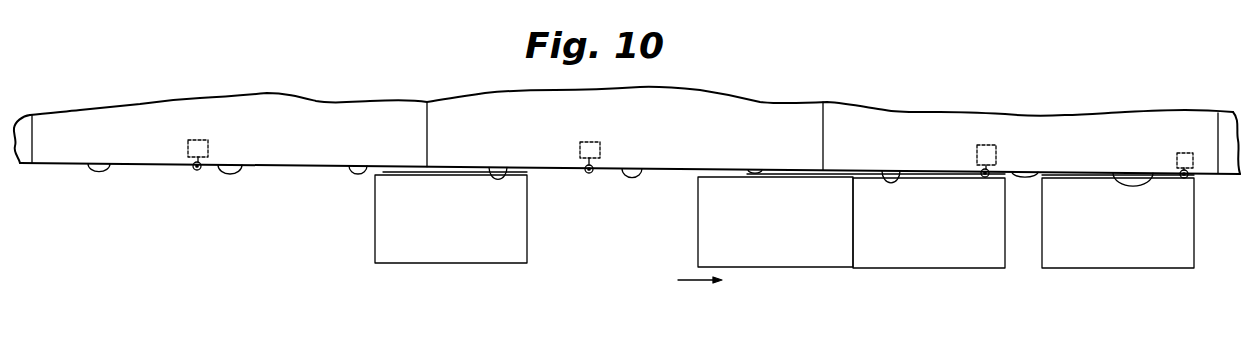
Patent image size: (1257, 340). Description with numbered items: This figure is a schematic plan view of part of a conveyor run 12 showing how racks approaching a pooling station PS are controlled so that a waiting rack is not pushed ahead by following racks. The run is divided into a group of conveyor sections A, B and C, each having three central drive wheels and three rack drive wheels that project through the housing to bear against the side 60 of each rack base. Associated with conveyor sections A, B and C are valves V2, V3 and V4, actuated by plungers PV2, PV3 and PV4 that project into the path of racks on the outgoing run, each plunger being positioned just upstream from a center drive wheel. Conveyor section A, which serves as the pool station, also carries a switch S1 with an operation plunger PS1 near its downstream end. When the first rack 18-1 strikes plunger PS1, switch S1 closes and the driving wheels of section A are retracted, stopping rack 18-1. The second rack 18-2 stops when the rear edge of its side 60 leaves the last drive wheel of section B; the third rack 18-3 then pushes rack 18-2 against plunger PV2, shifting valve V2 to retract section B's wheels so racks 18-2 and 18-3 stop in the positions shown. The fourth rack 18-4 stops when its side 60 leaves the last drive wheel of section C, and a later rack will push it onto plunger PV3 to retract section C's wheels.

The conveyor run 12 is at (293, 174).
The conveyor section A is at (1103, 117).
The conveyor section B is at (682, 93).
The conveyor section C is at (302, 97).
The side of the rack base 60 is at (437, 172).
The first rack 18-1 is at (1127, 260).
The second rack 18-2 is at (918, 260).
The third rack 18-3 is at (778, 258).
The fourth rack 18-4 is at (448, 256).
The valve V4 is at (201, 140).
The plunger PV4 is at (196, 170).
The valve V3 is at (595, 142).
The plunger PV3 is at (589, 173).
The valve V2 is at (986, 147).
The plunger PV2 is at (992, 176).
The switch S1 is at (1182, 150).
The operation plunger PS1 is at (1190, 177).
The pooling station PS is at (1025, 275).